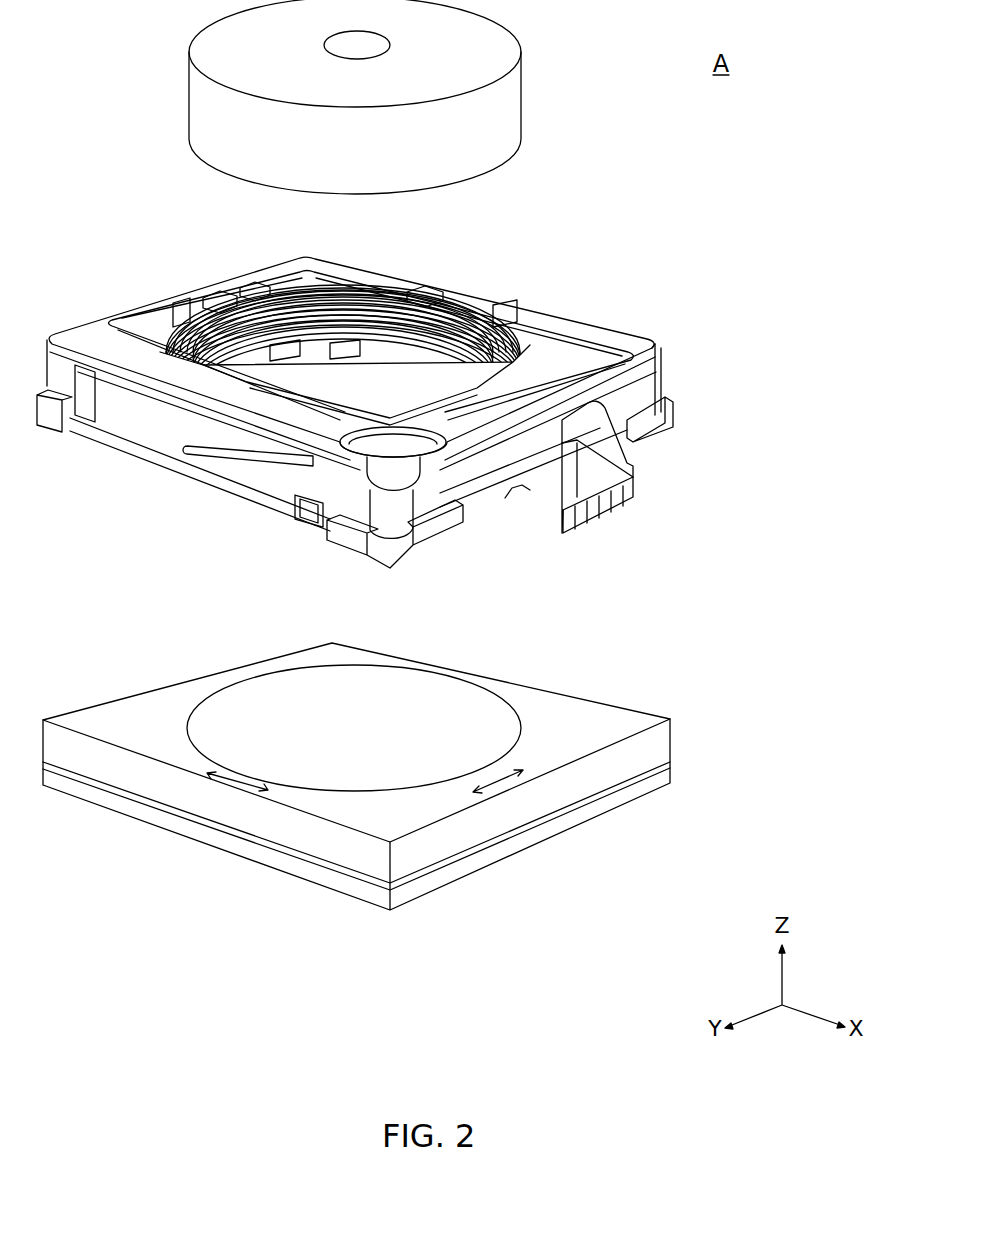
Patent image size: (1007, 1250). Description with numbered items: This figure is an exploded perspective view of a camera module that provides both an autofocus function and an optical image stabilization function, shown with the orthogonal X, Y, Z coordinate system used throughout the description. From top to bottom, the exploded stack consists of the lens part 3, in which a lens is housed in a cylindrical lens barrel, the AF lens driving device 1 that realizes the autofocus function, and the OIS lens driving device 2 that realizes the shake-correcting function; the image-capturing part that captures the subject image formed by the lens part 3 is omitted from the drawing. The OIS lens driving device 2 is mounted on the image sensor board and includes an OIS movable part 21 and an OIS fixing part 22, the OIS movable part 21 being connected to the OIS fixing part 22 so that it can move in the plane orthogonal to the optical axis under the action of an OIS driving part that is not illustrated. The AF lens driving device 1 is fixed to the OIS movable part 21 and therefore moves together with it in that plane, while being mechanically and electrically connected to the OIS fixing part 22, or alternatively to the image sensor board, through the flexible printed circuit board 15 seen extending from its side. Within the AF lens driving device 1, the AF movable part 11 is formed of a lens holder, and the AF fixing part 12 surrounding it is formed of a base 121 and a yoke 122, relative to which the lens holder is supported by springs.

The AF lens driving device 1 is at (428, 404).
The OIS lens driving device 2 is at (392, 770).
The lens part 3 is at (521, 90).
The AF movable part (lens holder) 11 is at (462, 325).
The AF fixing part 12 is at (630, 463).
The base 121 is at (463, 502).
The yoke 122 is at (665, 366).
The flexible printed circuit board 15 is at (150, 438).
The OIS movable part 21 is at (670, 740).
The OIS fixing part 22 is at (670, 775).